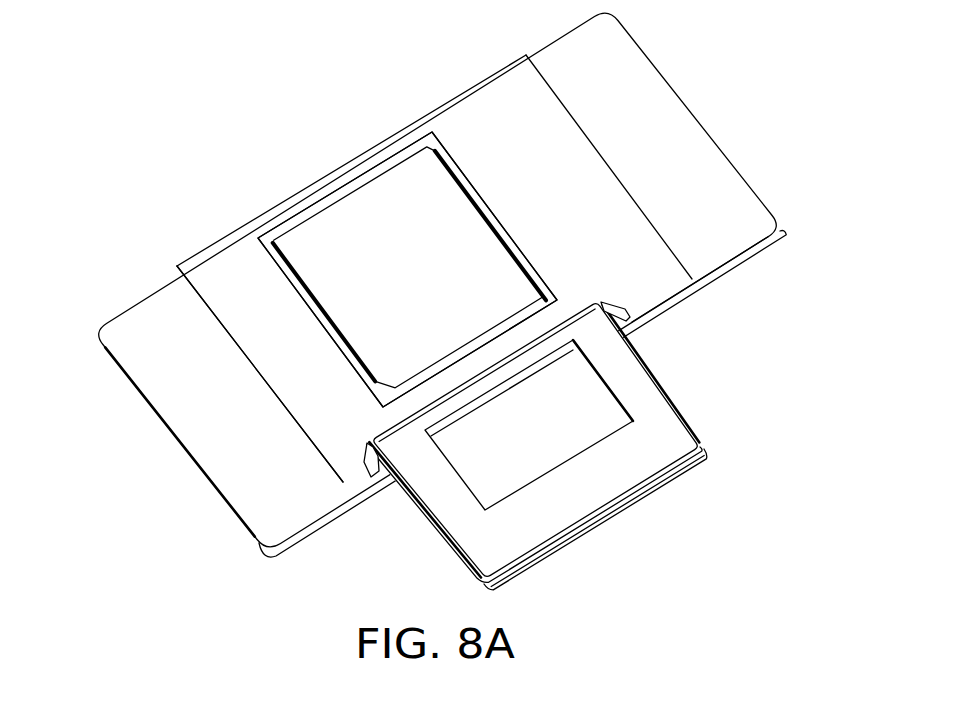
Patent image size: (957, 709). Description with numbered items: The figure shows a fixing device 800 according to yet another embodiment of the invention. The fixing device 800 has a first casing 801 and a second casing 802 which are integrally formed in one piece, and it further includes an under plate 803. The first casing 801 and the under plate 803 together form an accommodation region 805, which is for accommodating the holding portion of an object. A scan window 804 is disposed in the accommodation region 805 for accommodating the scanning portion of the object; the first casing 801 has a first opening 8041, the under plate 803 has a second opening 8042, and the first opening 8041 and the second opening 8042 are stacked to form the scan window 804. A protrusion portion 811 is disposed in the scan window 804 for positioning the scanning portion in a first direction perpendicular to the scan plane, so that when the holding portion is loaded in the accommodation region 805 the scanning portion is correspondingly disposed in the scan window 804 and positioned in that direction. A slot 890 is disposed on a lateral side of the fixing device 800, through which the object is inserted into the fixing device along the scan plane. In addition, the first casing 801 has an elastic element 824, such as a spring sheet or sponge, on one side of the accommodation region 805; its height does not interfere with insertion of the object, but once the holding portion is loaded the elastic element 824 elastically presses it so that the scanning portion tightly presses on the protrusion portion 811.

The fixing device 800 is at (74, 58).
The first casing 801 is at (530, 102).
The second casing 802 is at (690, 287).
The under plate 803 is at (648, 412).
The scan window 804 is at (378, 225).
The accommodation region 805 is at (258, 272).
The protrusion portion 811 is at (455, 483).
The elastic element 824 is at (513, 250).
The slot 890 is at (380, 463).
The first opening 8041 is at (453, 289).
The second opening 8042 is at (568, 439).